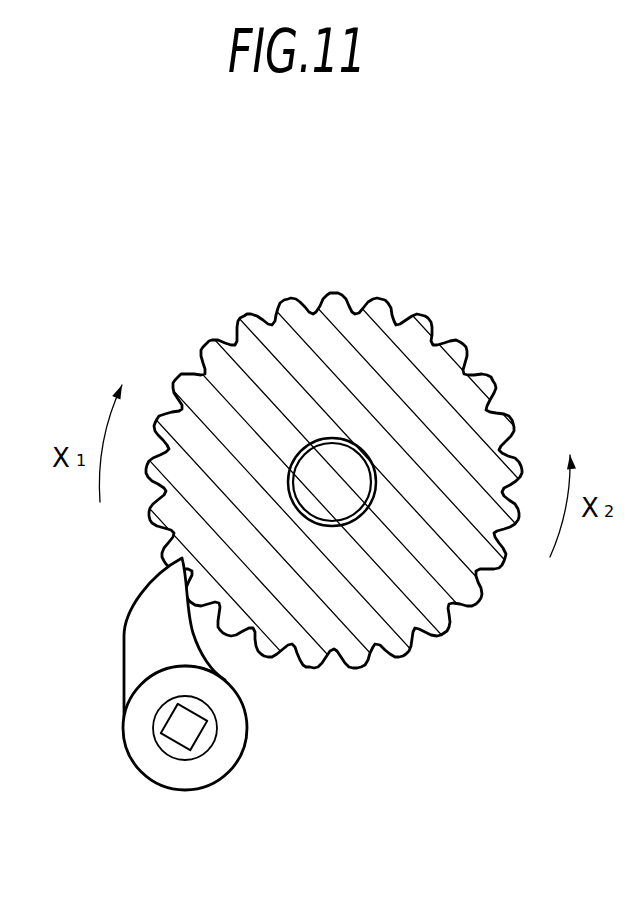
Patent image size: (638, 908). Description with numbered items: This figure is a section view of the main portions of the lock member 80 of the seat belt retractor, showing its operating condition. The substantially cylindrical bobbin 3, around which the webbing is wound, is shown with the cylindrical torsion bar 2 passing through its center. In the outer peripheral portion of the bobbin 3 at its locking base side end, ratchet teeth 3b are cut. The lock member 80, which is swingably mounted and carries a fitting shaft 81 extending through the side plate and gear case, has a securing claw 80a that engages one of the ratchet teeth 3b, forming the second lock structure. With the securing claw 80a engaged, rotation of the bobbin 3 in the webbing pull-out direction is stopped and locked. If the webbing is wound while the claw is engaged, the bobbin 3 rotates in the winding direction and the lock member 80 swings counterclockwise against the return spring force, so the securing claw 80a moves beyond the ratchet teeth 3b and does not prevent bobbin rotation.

The bobbin 3 is at (319, 518).
The ratchet teeth 3b is at (350, 670).
The torsion bar 2 is at (340, 497).
The lock member 80 is at (169, 675).
The securing claw 80a is at (166, 580).
The fitting shaft 81 is at (192, 730).